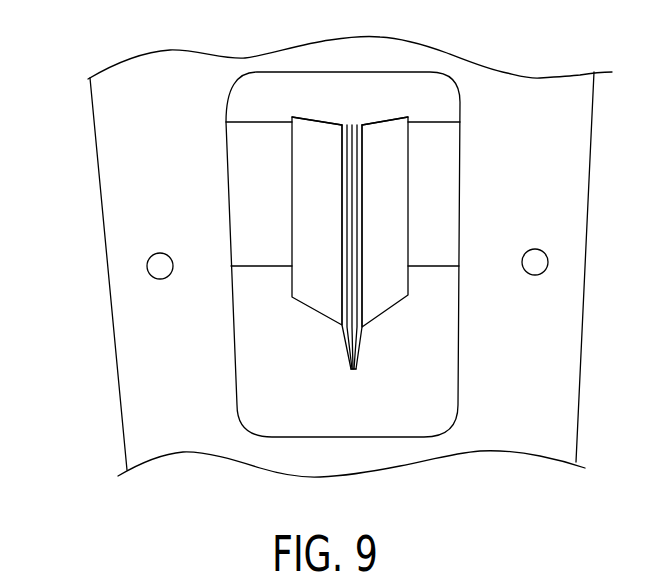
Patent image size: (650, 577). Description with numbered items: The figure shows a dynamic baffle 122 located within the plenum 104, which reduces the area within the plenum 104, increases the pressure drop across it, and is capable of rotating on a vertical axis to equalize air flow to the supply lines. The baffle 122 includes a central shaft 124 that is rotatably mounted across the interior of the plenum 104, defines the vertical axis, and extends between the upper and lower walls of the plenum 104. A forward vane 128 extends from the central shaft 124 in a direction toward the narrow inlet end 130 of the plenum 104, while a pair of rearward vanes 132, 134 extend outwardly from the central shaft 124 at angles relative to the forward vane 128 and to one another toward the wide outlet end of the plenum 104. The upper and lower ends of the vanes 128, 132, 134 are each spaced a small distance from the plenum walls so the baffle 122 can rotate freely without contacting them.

The plenum 104 is at (137, 233).
The dynamic baffle 122 is at (347, 110).
The central shaft 124 is at (342, 167).
The forward vane 128 is at (360, 253).
The narrow inlet end 130 is at (234, 313).
The rearward vane 132 is at (302, 207).
The rearward vane 134 is at (391, 178).